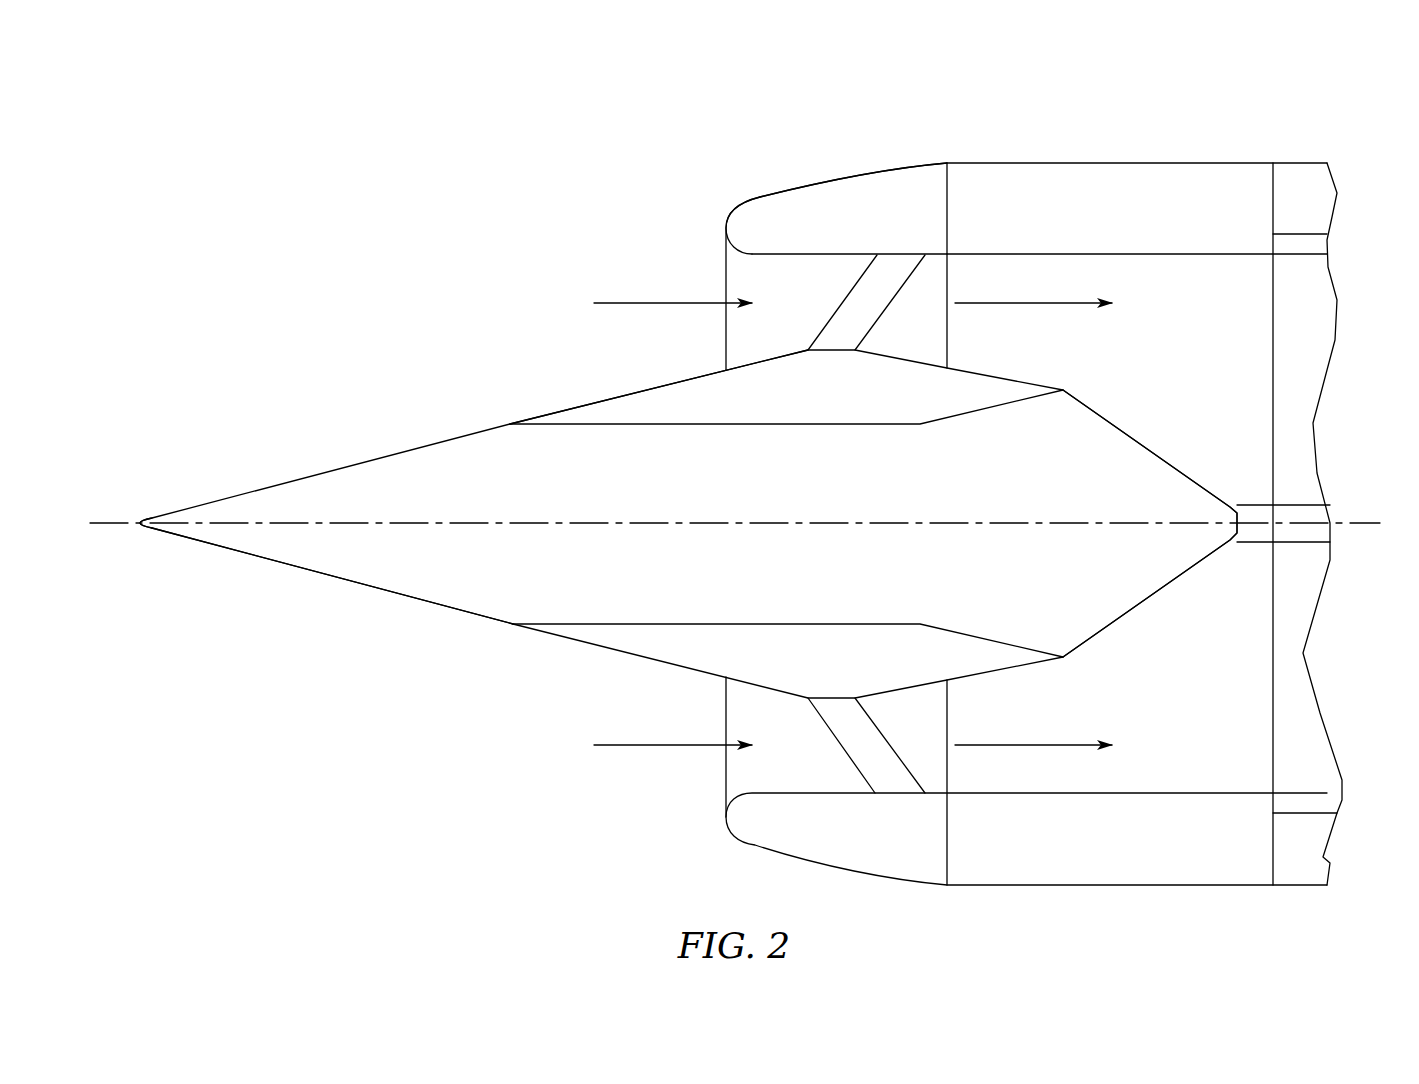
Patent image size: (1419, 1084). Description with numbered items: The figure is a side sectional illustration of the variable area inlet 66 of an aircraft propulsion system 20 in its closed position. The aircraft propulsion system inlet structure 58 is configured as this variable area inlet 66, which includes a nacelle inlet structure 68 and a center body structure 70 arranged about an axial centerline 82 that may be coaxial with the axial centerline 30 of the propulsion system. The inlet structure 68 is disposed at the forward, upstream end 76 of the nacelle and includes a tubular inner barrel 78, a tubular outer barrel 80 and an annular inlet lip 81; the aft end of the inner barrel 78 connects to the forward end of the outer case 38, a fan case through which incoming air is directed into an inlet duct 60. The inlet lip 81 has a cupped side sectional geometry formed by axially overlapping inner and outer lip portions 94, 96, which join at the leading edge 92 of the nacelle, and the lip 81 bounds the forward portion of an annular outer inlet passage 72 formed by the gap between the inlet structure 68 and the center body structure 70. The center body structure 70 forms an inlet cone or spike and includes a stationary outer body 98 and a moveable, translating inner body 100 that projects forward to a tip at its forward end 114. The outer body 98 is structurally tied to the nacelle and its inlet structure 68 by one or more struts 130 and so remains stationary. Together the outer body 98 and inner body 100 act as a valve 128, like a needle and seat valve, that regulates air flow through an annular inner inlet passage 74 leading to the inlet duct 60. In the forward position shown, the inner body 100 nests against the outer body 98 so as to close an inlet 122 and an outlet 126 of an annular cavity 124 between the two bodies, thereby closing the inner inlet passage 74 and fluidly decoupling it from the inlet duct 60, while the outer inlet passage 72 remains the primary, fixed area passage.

The aircraft propulsion system 20 is at (243, 152).
The axial centerline 30 is at (753, 570).
The axial centerline of the variable area inlet 82 is at (1365, 526).
The outer case 38 is at (1293, 233).
The aircraft propulsion system inlet structure 58 is at (881, 832).
The variable area inlet 66 is at (553, 790).
The inlet duct 60 is at (1305, 762).
The nacelle inlet structure 68 is at (1232, 126).
The center body structure 70 is at (712, 386).
The valve 128 is at (508, 400).
The outer inlet passage 72 is at (767, 291).
The inner inlet passage 74 is at (788, 660).
The annular cavity 124 is at (733, 653).
The forward upstream end of the nacelle 76 is at (677, 219).
The leading edge of the nacelle 92 is at (725, 228).
The inner barrel 78 is at (1092, 255).
The outer barrel 80 is at (1057, 163).
The inlet lip 81 is at (845, 168).
The inner lip portion 94 is at (840, 254).
The outer lip portion 96 is at (795, 182).
The outer body 98 is at (593, 402).
The inner body 100 is at (357, 458).
The forward upstream end of the inner body 114 is at (130, 526).
The inlet to the annular cavity 122 is at (513, 628).
The outlet of the annular cavity 126 is at (1040, 662).
The struts 130 is at (883, 318).